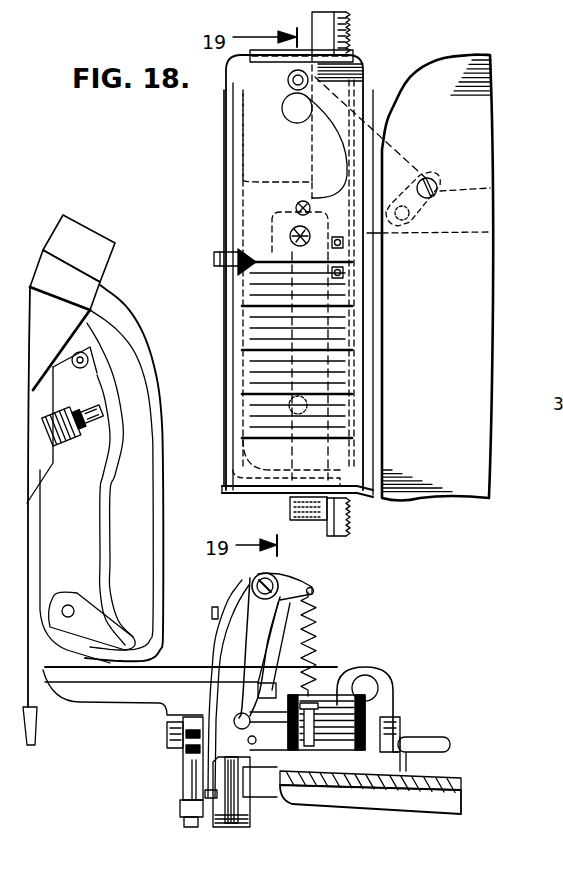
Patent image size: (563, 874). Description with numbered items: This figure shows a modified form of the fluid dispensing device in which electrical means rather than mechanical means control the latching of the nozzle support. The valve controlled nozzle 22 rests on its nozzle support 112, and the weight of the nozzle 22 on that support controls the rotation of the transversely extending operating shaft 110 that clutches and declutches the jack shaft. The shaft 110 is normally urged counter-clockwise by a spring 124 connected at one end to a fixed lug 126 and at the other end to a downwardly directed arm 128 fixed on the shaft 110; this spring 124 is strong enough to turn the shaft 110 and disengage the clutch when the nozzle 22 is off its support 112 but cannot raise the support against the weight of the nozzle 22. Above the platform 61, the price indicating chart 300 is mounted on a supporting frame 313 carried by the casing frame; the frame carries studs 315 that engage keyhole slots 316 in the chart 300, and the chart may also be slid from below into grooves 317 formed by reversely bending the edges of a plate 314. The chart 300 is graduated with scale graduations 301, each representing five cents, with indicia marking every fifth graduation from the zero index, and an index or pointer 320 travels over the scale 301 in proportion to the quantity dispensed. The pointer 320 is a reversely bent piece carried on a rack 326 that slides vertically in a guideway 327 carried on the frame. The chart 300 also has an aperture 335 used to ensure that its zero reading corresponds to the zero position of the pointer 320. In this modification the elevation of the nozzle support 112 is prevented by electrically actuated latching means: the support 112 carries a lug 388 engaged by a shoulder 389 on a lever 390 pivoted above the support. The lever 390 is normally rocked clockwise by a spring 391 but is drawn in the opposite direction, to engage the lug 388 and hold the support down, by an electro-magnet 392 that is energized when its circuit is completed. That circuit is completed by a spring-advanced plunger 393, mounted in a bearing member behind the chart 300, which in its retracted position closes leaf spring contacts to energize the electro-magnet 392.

The nozzle 22 is at (80, 240).
The platform 61 is at (433, 782).
The operating shaft 110 is at (416, 740).
The nozzle support 112 is at (87, 690).
The spring 124 is at (190, 800).
The fixed lug 126 is at (180, 806).
The downwardly directed arm 128 is at (190, 762).
The chart 300 is at (360, 72).
The scale graduation 301 is at (256, 325).
The supporting frame 313 is at (382, 133).
The plate 314 is at (242, 492).
The studs 315 is at (288, 80).
The keyhole slots 316 is at (290, 117).
The grooves 317 is at (224, 485).
The pointer 320 is at (214, 260).
The rack 326 is at (312, 19).
The guideway 327 is at (292, 508).
The aperture 335 is at (296, 228).
The lug 388 is at (272, 683).
The shoulder 389 is at (272, 660).
The lever 390 is at (250, 637).
The spring 391 is at (316, 652).
The electro-magnet 392 is at (345, 712).
The plunger 393 is at (290, 238).